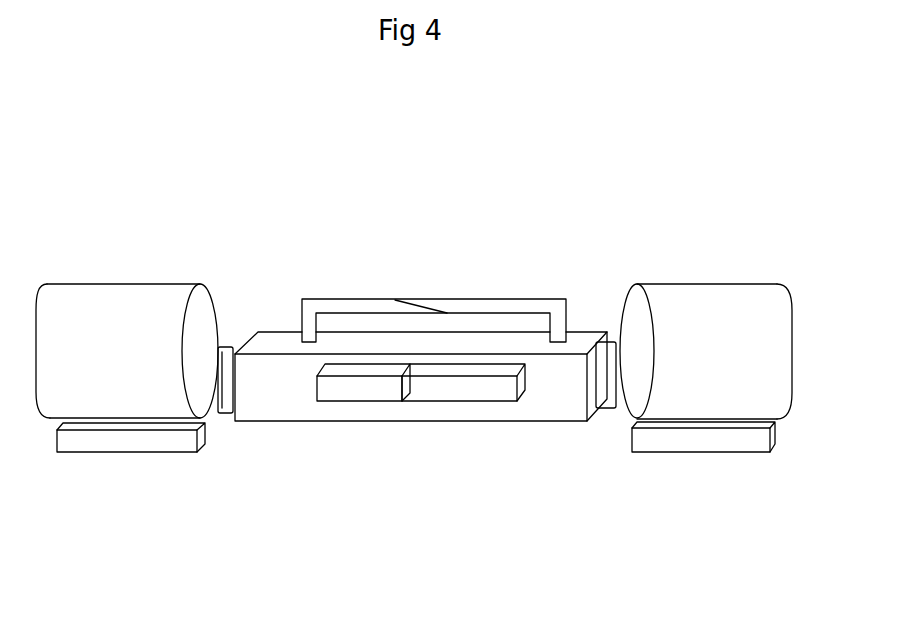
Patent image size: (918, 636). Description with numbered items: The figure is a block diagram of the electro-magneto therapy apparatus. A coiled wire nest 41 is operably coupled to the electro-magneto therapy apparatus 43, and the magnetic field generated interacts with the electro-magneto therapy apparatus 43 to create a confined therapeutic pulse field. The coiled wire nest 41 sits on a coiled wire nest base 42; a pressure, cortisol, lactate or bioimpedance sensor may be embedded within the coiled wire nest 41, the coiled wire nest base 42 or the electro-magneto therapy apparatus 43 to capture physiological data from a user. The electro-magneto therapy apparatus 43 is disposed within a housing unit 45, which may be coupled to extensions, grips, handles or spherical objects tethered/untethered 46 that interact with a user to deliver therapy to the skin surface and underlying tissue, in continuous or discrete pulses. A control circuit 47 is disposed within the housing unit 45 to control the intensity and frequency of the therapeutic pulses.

The coiled wire nest 41 is at (110, 265).
The coiled wire nest base 42 is at (140, 463).
The electro-magneto therapy apparatus 43 is at (413, 437).
The housing unit 45 is at (492, 407).
The extensions, grips, handles, spherical objects tethered/untethered 46 is at (442, 293).
The control circuit 47 is at (357, 407).